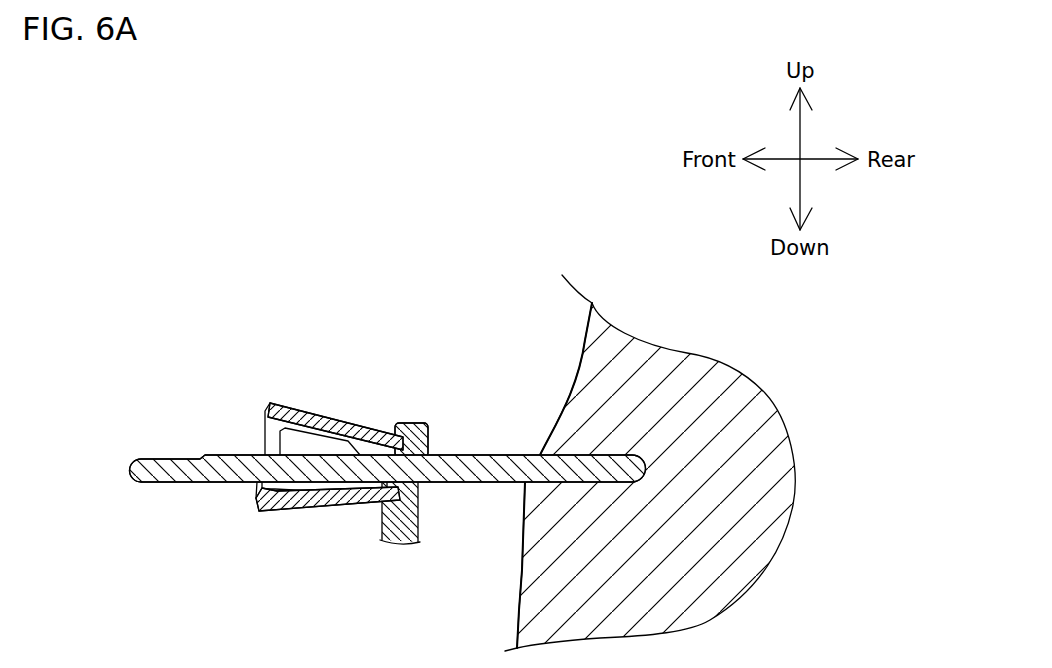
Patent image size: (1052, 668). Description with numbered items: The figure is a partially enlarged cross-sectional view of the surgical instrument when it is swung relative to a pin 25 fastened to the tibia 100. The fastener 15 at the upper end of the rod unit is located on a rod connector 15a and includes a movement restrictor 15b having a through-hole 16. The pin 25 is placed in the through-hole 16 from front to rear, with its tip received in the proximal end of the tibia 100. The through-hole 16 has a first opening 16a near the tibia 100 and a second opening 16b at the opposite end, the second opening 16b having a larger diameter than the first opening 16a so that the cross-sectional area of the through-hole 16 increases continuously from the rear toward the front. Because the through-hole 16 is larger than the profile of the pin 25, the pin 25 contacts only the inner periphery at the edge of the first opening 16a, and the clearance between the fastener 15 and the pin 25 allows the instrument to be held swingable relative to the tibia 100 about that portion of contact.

The tibia 100 is at (713, 377).
The pin 25 is at (174, 482).
The fastener 15 is at (333, 444).
The rod connector 15a is at (382, 517).
The movement restrictor 15b is at (338, 420).
The through-hole 16 is at (317, 470).
The first opening 16a is at (422, 486).
The second opening 16b is at (264, 410).